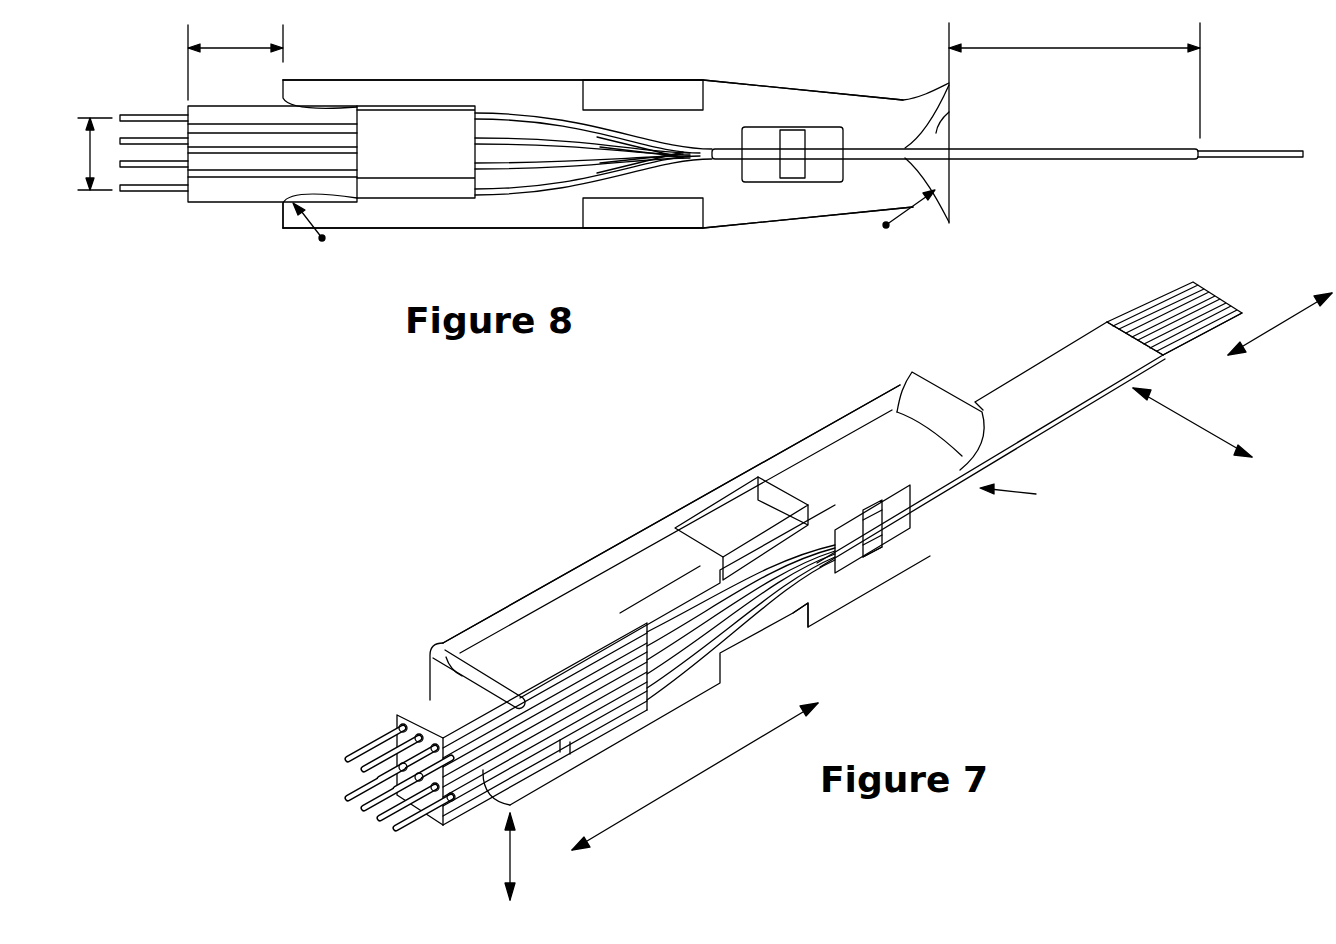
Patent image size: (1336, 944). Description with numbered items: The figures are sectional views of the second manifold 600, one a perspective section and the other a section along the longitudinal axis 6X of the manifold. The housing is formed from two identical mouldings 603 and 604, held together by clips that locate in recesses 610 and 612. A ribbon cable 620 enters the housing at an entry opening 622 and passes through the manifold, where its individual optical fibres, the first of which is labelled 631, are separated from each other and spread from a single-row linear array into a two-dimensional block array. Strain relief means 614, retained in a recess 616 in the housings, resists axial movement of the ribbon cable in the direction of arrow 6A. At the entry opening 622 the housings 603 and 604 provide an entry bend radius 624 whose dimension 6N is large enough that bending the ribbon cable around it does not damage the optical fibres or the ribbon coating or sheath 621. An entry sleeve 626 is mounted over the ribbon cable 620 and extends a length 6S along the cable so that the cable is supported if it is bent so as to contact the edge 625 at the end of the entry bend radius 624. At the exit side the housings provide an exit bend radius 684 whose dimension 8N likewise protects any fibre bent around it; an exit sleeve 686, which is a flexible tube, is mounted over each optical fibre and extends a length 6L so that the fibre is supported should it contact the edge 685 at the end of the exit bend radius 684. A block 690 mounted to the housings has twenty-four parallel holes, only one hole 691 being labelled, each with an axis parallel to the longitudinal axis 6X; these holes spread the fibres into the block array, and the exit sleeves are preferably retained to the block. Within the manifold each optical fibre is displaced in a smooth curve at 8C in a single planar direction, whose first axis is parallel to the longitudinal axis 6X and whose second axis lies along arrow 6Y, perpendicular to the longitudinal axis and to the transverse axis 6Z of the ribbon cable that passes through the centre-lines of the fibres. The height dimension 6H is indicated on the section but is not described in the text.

In FIG. 8, the second manifold 600 is at (226, 296).
In FIG. 7, the second manifold 600 is at (625, 503).
In FIG. 8, the moulding 603 is at (720, 92).
In FIG. 7, the moulding 603 is at (512, 610).
In FIG. 8, the moulding 604 is at (733, 212).
In FIG. 7, the moulding 604 is at (827, 600).
In FIG. 8, the recess 610 is at (632, 95).
In FIG. 7, the recess 610 is at (722, 498).
In FIG. 8, the recess 612 is at (647, 212).
In FIG. 7, the recess 612 is at (797, 620).
In FIG. 8, the strain relief means 614 is at (822, 132).
In FIG. 7, the strain relief means 614 is at (897, 530).
In FIG. 7, the recess 616 is at (873, 555).
In FIG. 8, the ribbon cable 620 is at (1232, 157).
In FIG. 7, the ribbon cable 620 is at (1188, 333).
In FIG. 7, the ribbon coating or sheath 621 is at (1143, 307).
In FIG. 7, the entry opening 622 is at (1025, 495).
In FIG. 8, the entry bend radius 624 is at (950, 120).
In FIG. 8, the edge 625 is at (950, 85).
In FIG. 7, the edge 625 is at (940, 421).
In FIG. 8, the entry sleeve 626 is at (1070, 148).
In FIG. 7, the entry sleeve 626 is at (1033, 383).
In FIG. 7, the optical fibre 631 is at (1193, 278).
In FIG. 8, the exit bend radius 684 is at (281, 98).
In FIG. 8, the edge 685 is at (285, 228).
In FIG. 8, the exit sleeve 686 is at (205, 192).
In FIG. 7, the exit sleeve 686 is at (420, 706).
In FIG. 7, the block 690 is at (642, 703).
In FIG. 7, the hole 691 is at (587, 728).
In FIG. 8, the smooth curve 8C is at (543, 197).
In FIG. 7, the smooth curve 8C is at (680, 620).
In FIG. 8, the dimension of the exit bend radius 8N is at (324, 228).
In FIG. 8, the dimension of the entry bend radius 6N is at (890, 226).
In FIG. 8, the length 6L is at (235, 62).
In FIG. 8, the height dimension 6H is at (82, 154).
In FIG. 8, the length 6S is at (1074, 80).
In FIG. 7, the longitudinal axis 6X is at (695, 776).
In FIG. 7, the arrow 6Y is at (494, 856).
In FIG. 7, the transverse axis 6Z is at (1192, 422).
In FIG. 7, the arrow 6A is at (1280, 324).